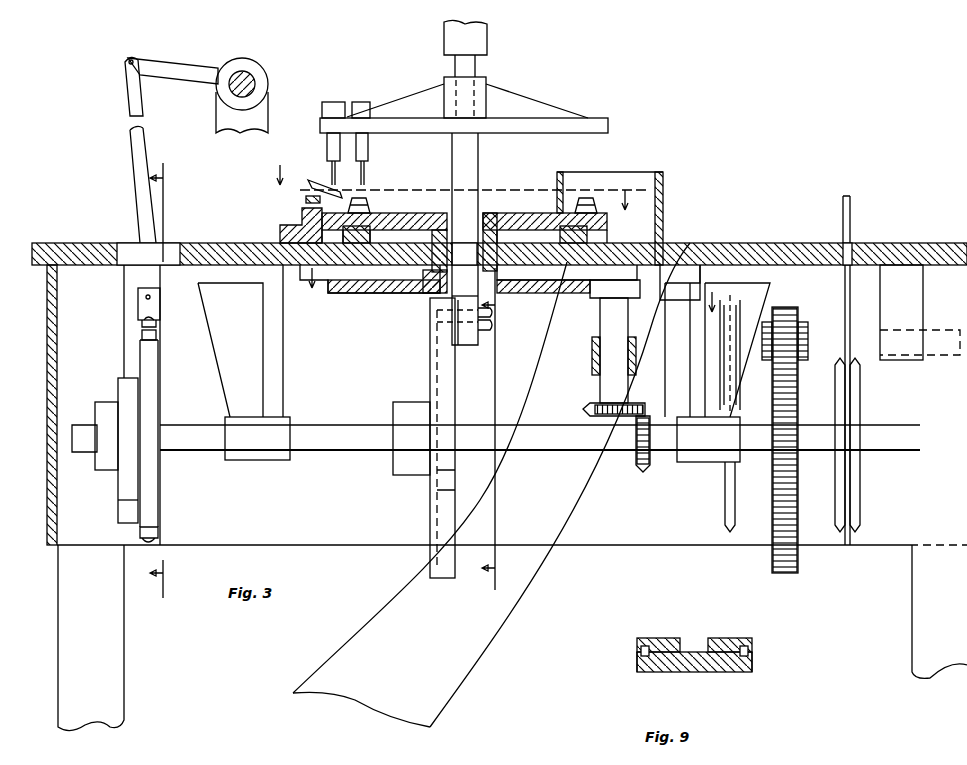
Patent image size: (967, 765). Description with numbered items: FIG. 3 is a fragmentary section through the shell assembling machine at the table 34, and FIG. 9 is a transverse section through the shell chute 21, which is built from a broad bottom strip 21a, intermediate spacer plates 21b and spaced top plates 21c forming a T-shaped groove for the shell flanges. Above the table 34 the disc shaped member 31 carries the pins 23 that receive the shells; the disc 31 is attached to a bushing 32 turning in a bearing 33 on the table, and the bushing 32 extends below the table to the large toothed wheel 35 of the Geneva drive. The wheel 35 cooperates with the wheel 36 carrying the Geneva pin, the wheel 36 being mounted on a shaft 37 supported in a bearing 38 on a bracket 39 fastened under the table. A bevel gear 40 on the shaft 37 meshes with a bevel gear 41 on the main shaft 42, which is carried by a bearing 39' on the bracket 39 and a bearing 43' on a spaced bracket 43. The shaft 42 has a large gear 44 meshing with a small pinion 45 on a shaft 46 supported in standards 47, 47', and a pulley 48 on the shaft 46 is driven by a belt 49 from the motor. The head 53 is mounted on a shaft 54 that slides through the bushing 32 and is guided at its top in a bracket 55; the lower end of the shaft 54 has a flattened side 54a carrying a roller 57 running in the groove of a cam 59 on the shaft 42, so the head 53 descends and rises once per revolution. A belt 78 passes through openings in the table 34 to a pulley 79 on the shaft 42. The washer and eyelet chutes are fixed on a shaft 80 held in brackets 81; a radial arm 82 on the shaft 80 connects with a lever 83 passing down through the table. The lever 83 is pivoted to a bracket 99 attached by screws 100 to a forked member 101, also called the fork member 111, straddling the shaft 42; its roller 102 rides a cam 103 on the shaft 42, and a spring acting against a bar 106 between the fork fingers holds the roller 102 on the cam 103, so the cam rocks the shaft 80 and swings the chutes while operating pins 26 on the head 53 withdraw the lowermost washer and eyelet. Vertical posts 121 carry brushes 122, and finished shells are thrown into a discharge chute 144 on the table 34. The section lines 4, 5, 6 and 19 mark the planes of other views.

In FIG. 3, the section line 4- 4 is at (497, 429).
In FIG. 3, the section line 5- 5 is at (166, 380).
In FIG. 3, the section line 6- 6 is at (510, 287).
In FIG. 3, the section line 19 is at (451, 178).
In FIG. 9, the chute 21 is at (722, 668).
In FIG. 9, the broad bottom strip 21a is at (752, 662).
In FIG. 9, the intermediate spacer plates 21b is at (640, 652).
In FIG. 9, the spaced top plates 21c is at (656, 640).
In FIG. 3, the pin 23 is at (362, 198).
In FIG. 3, the operating pin 26 is at (338, 186).
In FIG. 3, the disc shaped member 31 is at (508, 226).
In FIG. 3, the bushing 32 is at (495, 233).
In FIG. 3, the bearing 33 is at (440, 226).
In FIG. 3, the table 34 is at (745, 247).
In FIG. 3, the large toothed wheel 35 is at (390, 283).
In FIG. 3, the wheel 36 is at (598, 292).
In FIG. 3, the shaft 37 is at (612, 318).
In FIG. 3, the bearing 38 is at (596, 362).
In FIG. 3, the bracket 39 is at (715, 341).
In FIG. 3, the bearing 39' is at (708, 455).
In FIG. 3, the bevel gear 40 is at (585, 409).
In FIG. 3, the bevel gear 41 is at (645, 470).
In FIG. 3, the main shaft 42 is at (582, 446).
In FIG. 3, the bracket 43 is at (254, 341).
In FIG. 3, the bearing 43' is at (259, 447).
In FIG. 3, the large gear 44 is at (786, 568).
In FIG. 3, the small pinion 45 is at (800, 326).
In FIG. 3, the shaft 46 is at (857, 338).
In FIG. 3, the standards 47 is at (687, 261).
In FIG. 3, the bearing block 47' is at (916, 312).
In FIG. 3, the pulley 48 is at (731, 372).
In FIG. 3, the belt 49 is at (733, 512).
In FIG. 3, the head 53 is at (606, 128).
In FIG. 3, the shaft 54 is at (474, 156).
In FIG. 3, the flattened side 54a is at (442, 298).
In FIG. 3, the bracket 55 is at (488, 43).
In FIG. 3, the roller 57 is at (445, 322).
In FIG. 3, the cam 59 is at (437, 510).
In FIG. 3, the belt 78 is at (851, 216).
In FIG. 3, the pulley 79 is at (852, 493).
In FIG. 3, the shaft 80 is at (254, 80).
In FIG. 3, the brackets 81 is at (228, 122).
In FIG. 3, the radial arm 82 is at (176, 72).
In FIG. 3, the lever 83 is at (135, 165).
In FIG. 3, the bracket 99 is at (146, 305).
In FIG. 3, the screws 100 is at (142, 336).
In FIG. 3, the forked member 101 is at (148, 367).
In FIG. 3, the roller 102 is at (128, 390).
In FIG. 3, the cam 103 is at (127, 507).
In FIG. 3, the bar 106 is at (140, 531).
In FIG. 3, the fork member 111 is at (333, 100).
In FIG. 3, the vertical posts 121 is at (306, 199).
In FIG. 3, the brushes 122 is at (302, 222).
In FIG. 3, the chute 144 is at (650, 210).